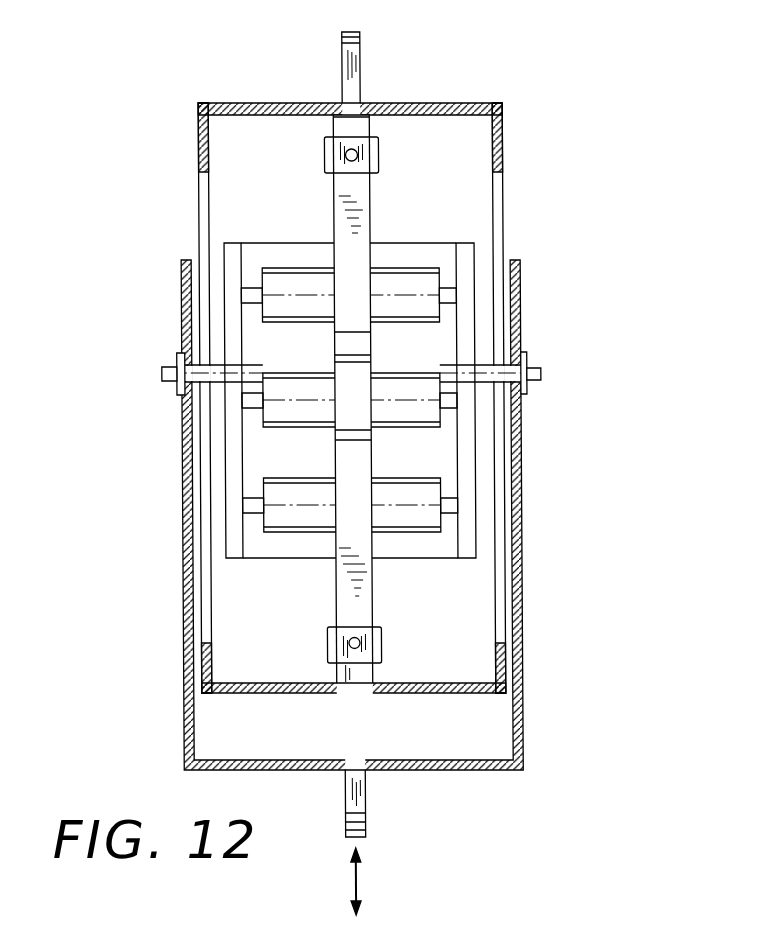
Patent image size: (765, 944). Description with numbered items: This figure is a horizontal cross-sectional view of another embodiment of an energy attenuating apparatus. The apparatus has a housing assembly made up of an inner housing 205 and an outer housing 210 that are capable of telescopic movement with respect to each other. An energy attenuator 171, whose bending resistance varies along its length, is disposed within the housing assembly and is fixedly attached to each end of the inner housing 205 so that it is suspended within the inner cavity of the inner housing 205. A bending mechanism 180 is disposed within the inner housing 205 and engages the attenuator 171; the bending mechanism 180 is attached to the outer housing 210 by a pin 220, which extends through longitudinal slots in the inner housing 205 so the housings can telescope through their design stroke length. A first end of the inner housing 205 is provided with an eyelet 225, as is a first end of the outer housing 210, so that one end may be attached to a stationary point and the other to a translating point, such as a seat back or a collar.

The energy attenuator 171 is at (371, 608).
The bending mechanism 180 is at (227, 427).
The inner housing 205 is at (501, 152).
The outer housing 210 is at (179, 591).
The pin 220 is at (543, 375).
The eyelet 225 is at (364, 808).